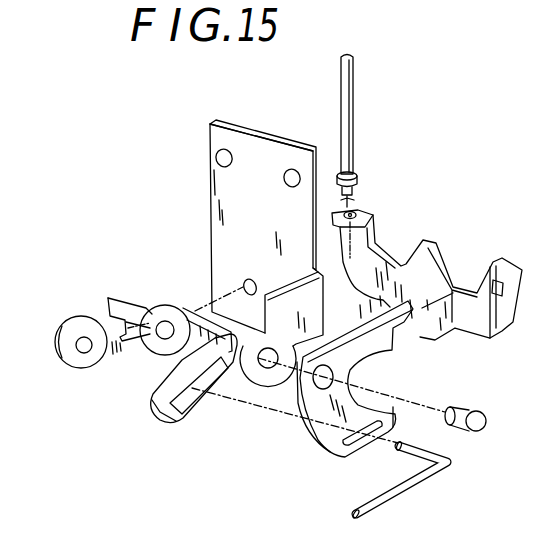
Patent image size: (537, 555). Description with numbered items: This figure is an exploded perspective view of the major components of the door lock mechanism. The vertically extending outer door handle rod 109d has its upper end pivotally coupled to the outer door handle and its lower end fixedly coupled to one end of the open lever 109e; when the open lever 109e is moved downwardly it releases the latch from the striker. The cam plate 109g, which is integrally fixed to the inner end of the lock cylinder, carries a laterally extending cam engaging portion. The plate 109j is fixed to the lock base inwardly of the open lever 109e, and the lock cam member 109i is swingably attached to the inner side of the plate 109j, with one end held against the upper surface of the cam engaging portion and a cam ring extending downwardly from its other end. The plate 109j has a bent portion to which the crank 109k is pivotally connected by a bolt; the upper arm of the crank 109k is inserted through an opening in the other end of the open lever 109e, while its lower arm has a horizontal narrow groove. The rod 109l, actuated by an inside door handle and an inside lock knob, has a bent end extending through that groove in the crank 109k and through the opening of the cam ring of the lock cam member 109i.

The outer door handle rod 109d is at (348, 135).
The open lever 109e is at (427, 258).
The cam plate 109g is at (83, 363).
The lock cam member 109i is at (165, 347).
The plate 109j is at (258, 157).
The crank 109k is at (358, 353).
The rod 109l is at (363, 506).